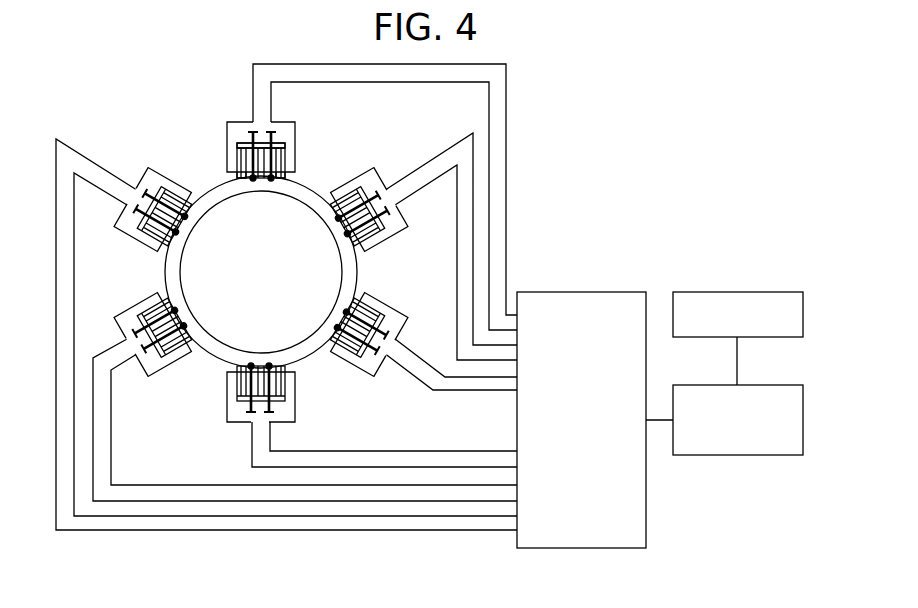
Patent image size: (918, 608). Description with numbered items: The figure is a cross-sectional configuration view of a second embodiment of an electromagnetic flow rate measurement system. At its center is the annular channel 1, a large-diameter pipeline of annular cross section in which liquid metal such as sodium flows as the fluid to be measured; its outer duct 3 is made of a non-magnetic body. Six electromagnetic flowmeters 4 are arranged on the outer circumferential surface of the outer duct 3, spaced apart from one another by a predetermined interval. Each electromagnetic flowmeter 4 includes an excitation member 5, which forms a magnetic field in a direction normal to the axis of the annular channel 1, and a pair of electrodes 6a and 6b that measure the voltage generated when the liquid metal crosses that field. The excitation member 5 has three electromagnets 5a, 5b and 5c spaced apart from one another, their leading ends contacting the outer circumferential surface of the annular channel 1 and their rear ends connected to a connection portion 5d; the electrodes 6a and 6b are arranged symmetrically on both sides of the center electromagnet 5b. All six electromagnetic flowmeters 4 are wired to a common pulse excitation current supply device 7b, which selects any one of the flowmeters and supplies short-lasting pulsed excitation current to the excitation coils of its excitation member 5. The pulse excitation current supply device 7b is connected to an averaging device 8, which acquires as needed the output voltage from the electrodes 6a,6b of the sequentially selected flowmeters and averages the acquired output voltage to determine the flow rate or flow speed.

The annular channel 1 is at (303, 356).
The outer duct 3 is at (358, 280).
The electromagnetic flowmeter 4 is at (267, 273).
The excitation member 5 is at (272, 141).
The electromagnet 5a is at (286, 178).
The center electromagnet 5b is at (262, 168).
The electromagnet 5c is at (236, 178).
The connection portion 5d is at (240, 147).
The electrode 6a is at (248, 138).
The electrode 6b is at (275, 138).
The pair of electrodes 6a,6b is at (715, 291).
The pulse excitation current supply device 7b is at (603, 291).
The averaging device 8 is at (760, 384).